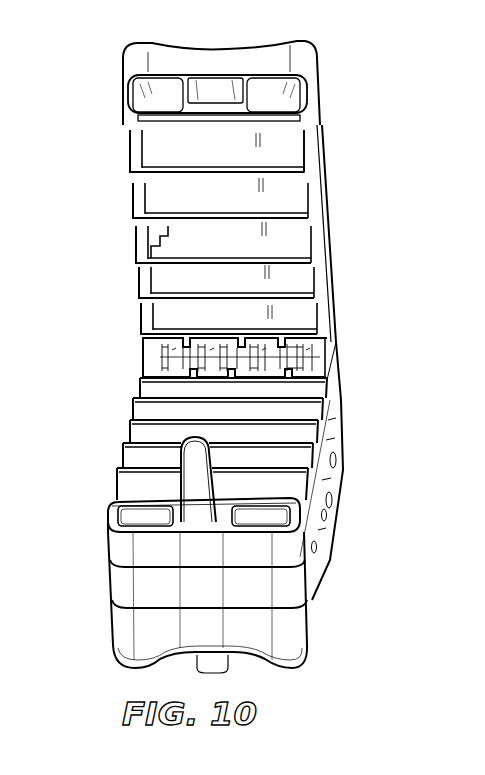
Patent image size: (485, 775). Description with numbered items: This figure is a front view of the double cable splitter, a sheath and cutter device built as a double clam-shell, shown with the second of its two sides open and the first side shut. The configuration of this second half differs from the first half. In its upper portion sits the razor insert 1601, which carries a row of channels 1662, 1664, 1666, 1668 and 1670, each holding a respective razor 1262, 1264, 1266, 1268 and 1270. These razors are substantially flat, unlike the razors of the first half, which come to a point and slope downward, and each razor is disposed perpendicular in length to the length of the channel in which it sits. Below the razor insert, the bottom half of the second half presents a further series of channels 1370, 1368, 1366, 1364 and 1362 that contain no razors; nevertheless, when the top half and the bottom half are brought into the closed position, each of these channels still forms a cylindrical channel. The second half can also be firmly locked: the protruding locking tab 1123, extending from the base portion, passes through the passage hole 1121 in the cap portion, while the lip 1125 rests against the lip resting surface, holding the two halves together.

The passage hole 1121 is at (215, 97).
The razor insert 1601 is at (173, 128).
The channel 1662 is at (157, 140).
The channel 1664 is at (160, 184).
The channel 1666 is at (165, 227).
The channel 1668 is at (168, 265).
The channel 1670 is at (170, 309).
The razor 1262 is at (262, 140).
The razor 1264 is at (265, 184).
The razor 1266 is at (268, 226).
The razor 1268 is at (271, 264).
The razor 1270 is at (274, 308).
The channel 1370 is at (162, 390).
The channel 1368 is at (158, 414).
The channel 1366 is at (151, 434).
The channel 1364 is at (147, 458).
The channel 1362 is at (141, 488).
The protruding locking tab 1123 is at (197, 495).
The lip 1125 is at (205, 475).